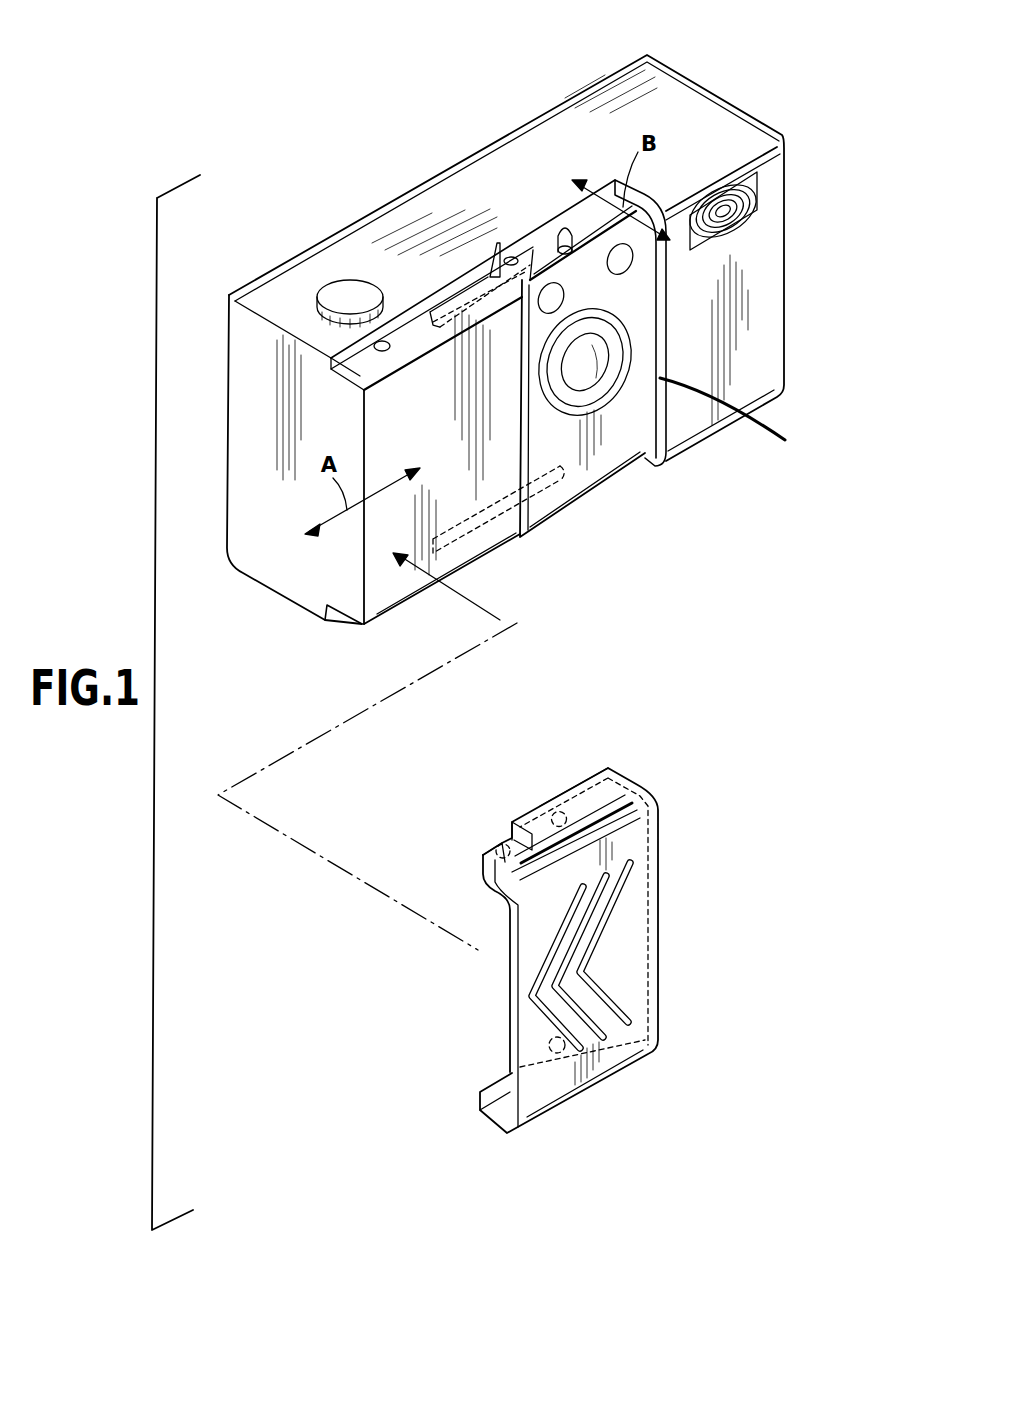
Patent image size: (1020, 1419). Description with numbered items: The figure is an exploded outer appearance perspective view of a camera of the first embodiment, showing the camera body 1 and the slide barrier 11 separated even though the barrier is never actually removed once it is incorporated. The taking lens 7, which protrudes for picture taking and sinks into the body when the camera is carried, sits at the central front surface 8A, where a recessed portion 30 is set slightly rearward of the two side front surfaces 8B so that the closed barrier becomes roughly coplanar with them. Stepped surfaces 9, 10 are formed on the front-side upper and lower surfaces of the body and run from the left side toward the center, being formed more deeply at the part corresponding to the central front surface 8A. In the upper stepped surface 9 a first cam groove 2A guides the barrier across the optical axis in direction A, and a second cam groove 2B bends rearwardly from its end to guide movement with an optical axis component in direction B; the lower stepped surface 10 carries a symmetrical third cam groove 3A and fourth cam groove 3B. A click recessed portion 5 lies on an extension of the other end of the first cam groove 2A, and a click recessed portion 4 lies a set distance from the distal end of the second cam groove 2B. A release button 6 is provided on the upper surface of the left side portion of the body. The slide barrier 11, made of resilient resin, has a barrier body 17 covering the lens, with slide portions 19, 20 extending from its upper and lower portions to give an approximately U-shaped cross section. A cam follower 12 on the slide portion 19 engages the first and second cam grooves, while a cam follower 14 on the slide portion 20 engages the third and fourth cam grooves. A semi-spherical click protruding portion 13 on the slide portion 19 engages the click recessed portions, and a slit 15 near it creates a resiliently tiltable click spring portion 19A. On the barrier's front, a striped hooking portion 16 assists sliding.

The camera body 1 is at (708, 112).
The first cam groove 2A is at (511, 256).
The second cam groove 2B is at (567, 228).
The third cam groove 3A is at (543, 492).
The fourth cam groove 3B is at (570, 478).
The click recessed portion 4 is at (496, 247).
The click recessed portion 5 is at (389, 342).
The release button 6 is at (343, 290).
The taking lens 7 is at (596, 378).
The central front surface 8A is at (638, 403).
The side front surfaces 8B is at (397, 420).
The stepped surface 9 is at (357, 367).
The stepped surface 10 is at (343, 618).
The slide barrier 11 is at (684, 840).
The cam follower 12 is at (559, 811).
The click protruding portion 13 is at (500, 843).
The cam follower 14 is at (550, 1045).
The slit 15 is at (524, 821).
The hooking portion 16 is at (608, 990).
The barrier body 17 is at (638, 934).
The slide portion 19 is at (613, 789).
The click spring portion 19A is at (495, 860).
The slide portion 20 is at (495, 1100).
The recessed portion 30 is at (742, 418).